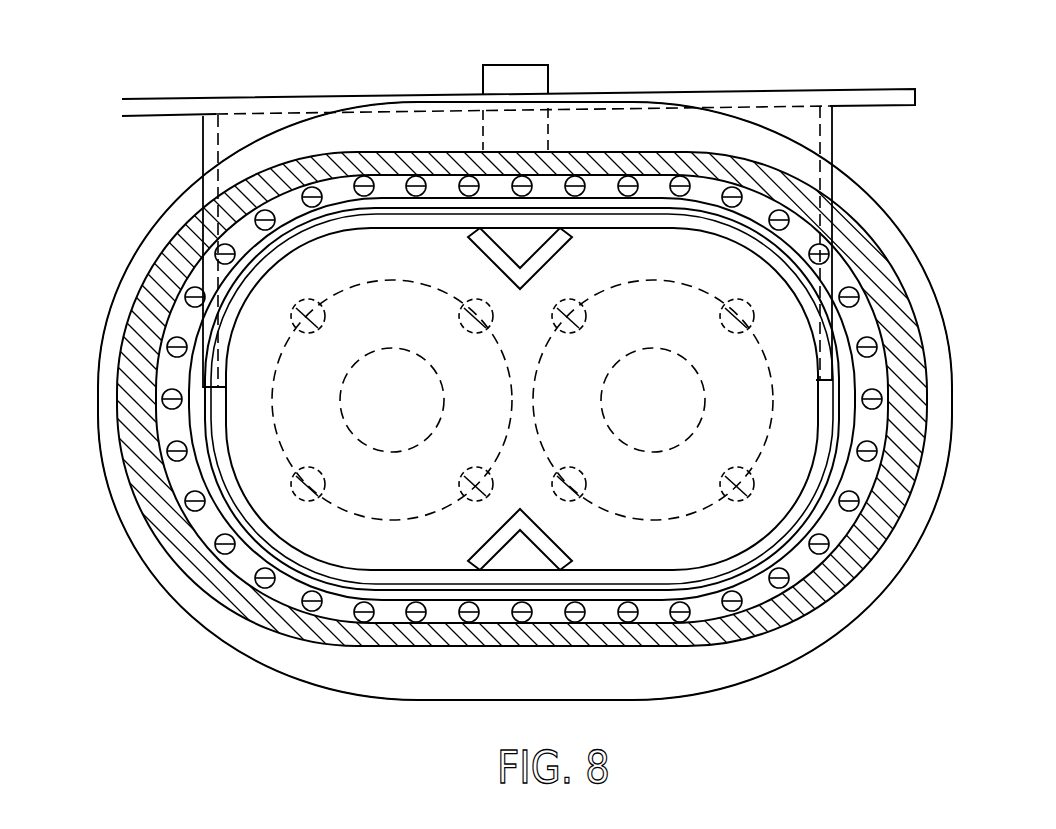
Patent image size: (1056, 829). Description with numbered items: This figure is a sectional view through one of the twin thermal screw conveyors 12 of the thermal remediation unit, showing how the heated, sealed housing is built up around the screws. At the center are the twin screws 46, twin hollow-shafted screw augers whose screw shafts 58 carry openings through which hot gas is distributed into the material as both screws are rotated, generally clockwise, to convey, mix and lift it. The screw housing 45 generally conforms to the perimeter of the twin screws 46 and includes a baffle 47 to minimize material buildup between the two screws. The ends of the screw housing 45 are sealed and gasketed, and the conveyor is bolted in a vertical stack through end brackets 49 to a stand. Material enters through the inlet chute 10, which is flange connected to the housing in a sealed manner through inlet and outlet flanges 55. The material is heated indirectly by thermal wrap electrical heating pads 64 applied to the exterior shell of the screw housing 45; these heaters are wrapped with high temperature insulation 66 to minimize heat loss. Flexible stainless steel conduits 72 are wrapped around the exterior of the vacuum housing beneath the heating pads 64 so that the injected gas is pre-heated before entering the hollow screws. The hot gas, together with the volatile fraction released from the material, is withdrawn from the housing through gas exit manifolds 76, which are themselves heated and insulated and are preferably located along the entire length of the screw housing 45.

The inlet chute 10 is at (832, 126).
The twin thermal screw conveyor 12 is at (947, 250).
The screw housing 45 is at (233, 460).
The twin screws 46 is at (382, 282).
The baffle 47 is at (495, 266).
The end brackets 49 is at (265, 650).
The inlet and outlet flanges 55 is at (771, 91).
The screw shafts 58 is at (660, 350).
The thermal wrap electrical heating pads 64 is at (232, 560).
The high temperature insulation 66 is at (135, 430).
The flexible stainless steel conduits 72 is at (237, 553).
The gas exit manifolds 76 is at (548, 69).